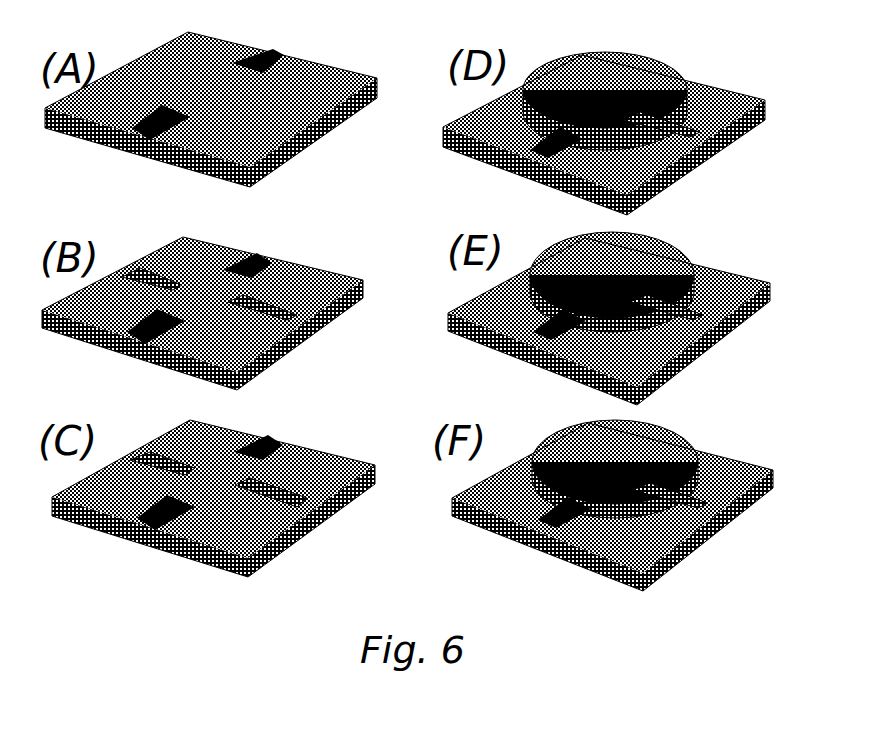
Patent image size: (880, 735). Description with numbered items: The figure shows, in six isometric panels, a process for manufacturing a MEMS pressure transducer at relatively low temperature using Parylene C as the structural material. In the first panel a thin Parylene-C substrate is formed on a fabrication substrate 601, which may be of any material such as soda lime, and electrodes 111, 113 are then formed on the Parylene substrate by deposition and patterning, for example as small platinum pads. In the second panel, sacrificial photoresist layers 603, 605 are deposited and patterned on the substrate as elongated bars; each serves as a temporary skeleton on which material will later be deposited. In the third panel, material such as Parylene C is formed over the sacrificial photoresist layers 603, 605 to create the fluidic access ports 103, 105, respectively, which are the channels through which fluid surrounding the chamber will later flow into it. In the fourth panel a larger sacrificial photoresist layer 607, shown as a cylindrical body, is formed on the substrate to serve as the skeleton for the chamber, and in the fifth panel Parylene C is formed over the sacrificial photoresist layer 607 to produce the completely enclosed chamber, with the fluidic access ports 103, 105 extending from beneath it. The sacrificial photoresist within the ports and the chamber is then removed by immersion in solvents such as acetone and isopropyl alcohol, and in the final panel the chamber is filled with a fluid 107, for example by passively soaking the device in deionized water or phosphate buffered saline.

The fluidic access port 103 is at (162, 462).
The fluidic access port 105 is at (285, 497).
The fluid 107 is at (632, 466).
The electrode 111 is at (172, 115).
The electrode 113 is at (268, 53).
The fabrication substrate 601 is at (296, 142).
The sacrificial photoresist layer 603 is at (150, 277).
The sacrificial photoresist layer 605 is at (268, 307).
The sacrificial photoresist layer 607 is at (648, 53).